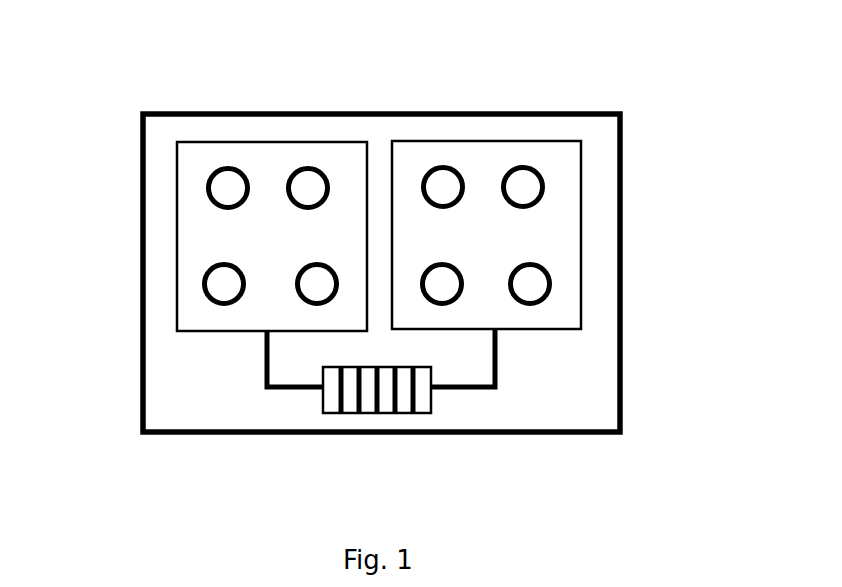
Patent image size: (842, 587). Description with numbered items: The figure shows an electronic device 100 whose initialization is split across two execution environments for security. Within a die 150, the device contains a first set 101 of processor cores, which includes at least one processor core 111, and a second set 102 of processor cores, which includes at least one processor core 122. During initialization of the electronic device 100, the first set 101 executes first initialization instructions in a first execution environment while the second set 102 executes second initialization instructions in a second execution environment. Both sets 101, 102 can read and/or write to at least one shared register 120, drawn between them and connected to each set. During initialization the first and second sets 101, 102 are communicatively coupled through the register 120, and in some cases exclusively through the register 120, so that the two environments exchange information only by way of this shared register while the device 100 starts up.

The electronic device 100 is at (208, 59).
The first set of processor cores 101 is at (200, 233).
The second set of processor cores 102 is at (573, 237).
The processor core 111 is at (186, 280).
The processor core 122 is at (572, 283).
The shared register 120 is at (385, 413).
The die 150 is at (598, 382).